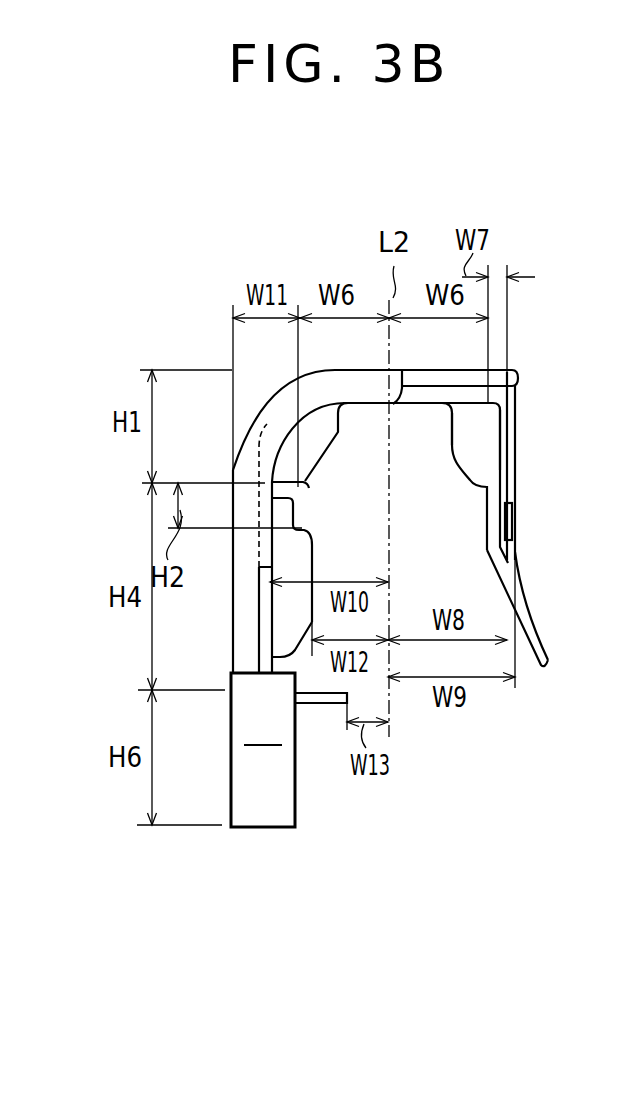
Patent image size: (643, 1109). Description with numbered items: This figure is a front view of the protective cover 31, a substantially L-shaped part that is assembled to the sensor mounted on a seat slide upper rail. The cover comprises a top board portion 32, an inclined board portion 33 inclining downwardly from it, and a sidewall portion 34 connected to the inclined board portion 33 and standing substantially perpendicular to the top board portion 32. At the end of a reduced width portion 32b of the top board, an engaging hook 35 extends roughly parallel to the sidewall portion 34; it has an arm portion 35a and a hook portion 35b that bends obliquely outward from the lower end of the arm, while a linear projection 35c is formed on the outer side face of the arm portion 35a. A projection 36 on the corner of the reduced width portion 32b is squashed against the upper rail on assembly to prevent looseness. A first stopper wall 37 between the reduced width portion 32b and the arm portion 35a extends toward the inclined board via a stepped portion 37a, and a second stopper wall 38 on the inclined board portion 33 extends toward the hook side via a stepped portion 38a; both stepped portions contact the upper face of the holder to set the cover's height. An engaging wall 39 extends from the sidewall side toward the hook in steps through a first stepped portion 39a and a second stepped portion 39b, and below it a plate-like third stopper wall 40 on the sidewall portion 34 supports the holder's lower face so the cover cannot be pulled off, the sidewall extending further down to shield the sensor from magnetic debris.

The protective cover 31 is at (212, 302).
The top board portion 32 is at (415, 373).
The reduced width portion 32b is at (414, 404).
The inclined board portion 33 is at (278, 412).
The sidewall portion 34 is at (230, 622).
The engaging hook 35 is at (502, 473).
The arm portion 35a is at (502, 445).
The hook portion 35b is at (530, 618).
The linear projection 35c is at (514, 520).
The projection 36 is at (520, 380).
The first stopper wall 37 is at (450, 457).
The stepped portion 37a is at (475, 489).
The second stopper wall 38 is at (338, 448).
The stepped portion 38a is at (308, 488).
The engaging wall 39 is at (292, 646).
The first stepped portion 39a is at (297, 500).
The second stepped portion 39b is at (312, 545).
The third stopper wall 40 is at (318, 705).